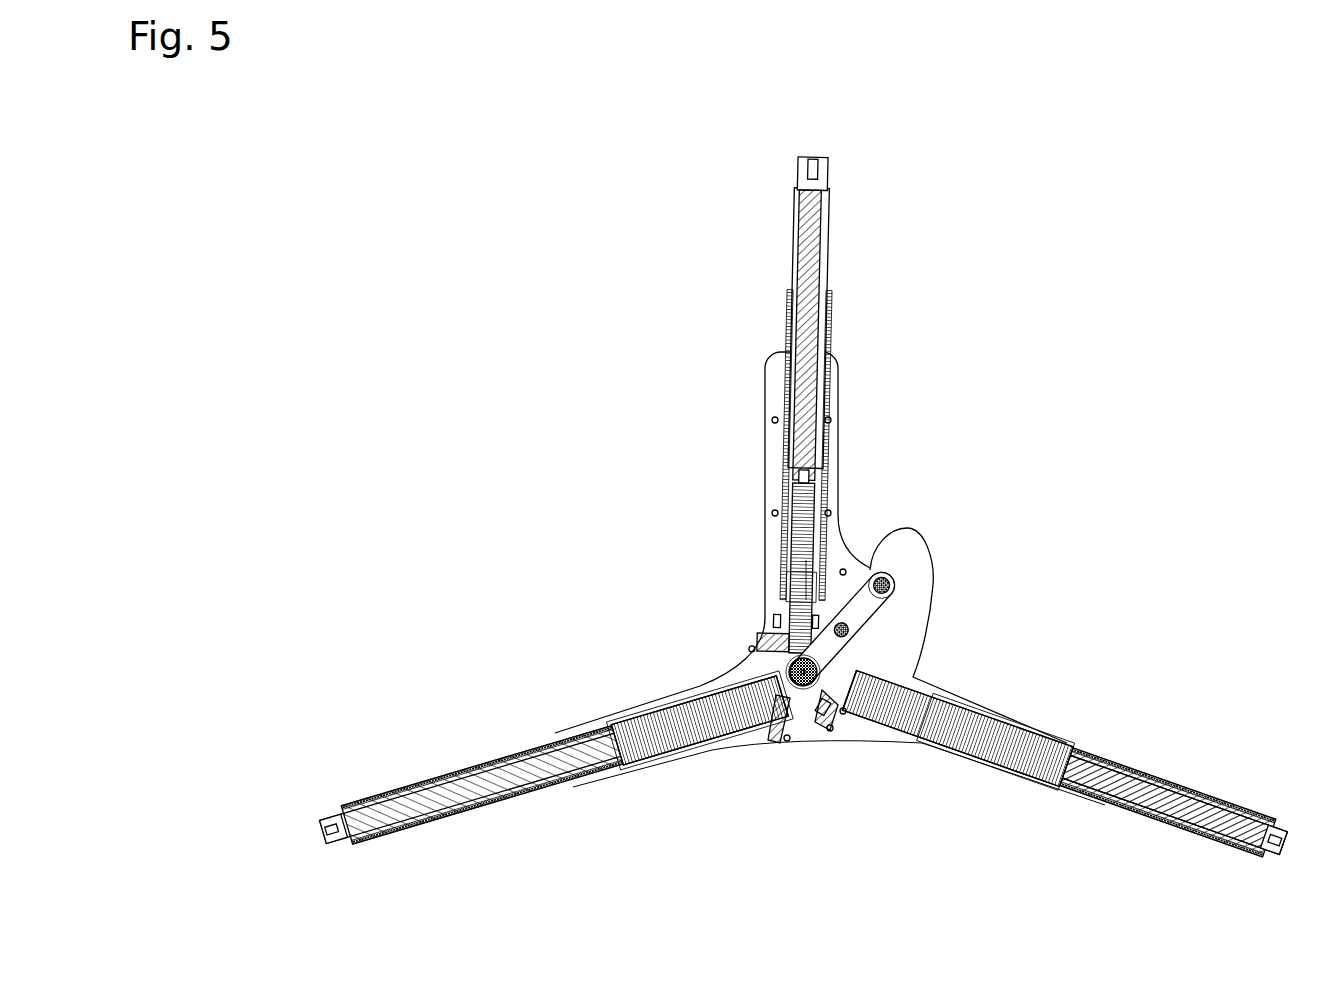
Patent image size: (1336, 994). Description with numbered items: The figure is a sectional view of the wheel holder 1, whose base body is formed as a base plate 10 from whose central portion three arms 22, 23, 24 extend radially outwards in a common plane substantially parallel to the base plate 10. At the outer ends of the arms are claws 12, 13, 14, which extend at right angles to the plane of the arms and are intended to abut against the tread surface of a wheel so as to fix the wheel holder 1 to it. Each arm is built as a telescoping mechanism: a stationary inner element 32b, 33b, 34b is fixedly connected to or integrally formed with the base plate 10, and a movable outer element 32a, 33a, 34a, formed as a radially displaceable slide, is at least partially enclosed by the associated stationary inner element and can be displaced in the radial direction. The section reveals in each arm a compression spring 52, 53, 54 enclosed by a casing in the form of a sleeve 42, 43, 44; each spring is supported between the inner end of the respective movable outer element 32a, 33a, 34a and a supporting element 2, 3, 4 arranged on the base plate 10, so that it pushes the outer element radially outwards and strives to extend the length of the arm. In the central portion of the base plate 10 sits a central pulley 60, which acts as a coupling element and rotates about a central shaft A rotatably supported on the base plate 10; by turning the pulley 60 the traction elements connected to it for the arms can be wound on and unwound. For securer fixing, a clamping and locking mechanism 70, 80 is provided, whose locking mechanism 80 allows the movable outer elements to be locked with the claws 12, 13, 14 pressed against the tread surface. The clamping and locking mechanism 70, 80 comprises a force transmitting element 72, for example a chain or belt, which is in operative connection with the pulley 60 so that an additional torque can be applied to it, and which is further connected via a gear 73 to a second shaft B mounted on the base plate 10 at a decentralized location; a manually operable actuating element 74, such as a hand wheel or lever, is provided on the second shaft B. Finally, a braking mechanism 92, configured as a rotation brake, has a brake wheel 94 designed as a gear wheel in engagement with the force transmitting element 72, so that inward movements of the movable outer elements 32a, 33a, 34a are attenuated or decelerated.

The wheel holder 1 is at (1200, 254).
The supporting element 2 is at (750, 640).
The supporting element 3 is at (837, 717).
The supporting element 4 is at (782, 728).
The base plate 10 is at (830, 458).
The claw 12 is at (797, 386).
The claw 13 is at (1075, 776).
The claw 14 is at (541, 801).
The arm 22 is at (797, 378).
The arm 23 is at (1066, 767).
The arm 24 is at (562, 761).
The movable outer element 32a is at (836, 302).
The stationary inner element 32b is at (836, 386).
The movable outer element 33a is at (1132, 790).
The stationary inner element 33b is at (1144, 794).
The movable outer element 34a is at (491, 782).
The stationary inner element 34b is at (562, 761).
The sleeve 42 is at (753, 561).
The sleeve 43 is at (878, 722).
The sleeve 44 is at (697, 733).
The compression spring 52 is at (787, 578).
The compression spring 53 is at (912, 720).
The compression spring 54 is at (699, 720).
The central pulley 60 is at (817, 700).
The clamping and locking mechanism 70 is at (883, 587).
The locking mechanism 80 is at (883, 587).
The force transmitting element 72 is at (883, 587).
The gear 73 is at (890, 570).
The manually operable actuating element 74 is at (937, 558).
The braking mechanism 92 is at (832, 598).
The brake wheel 94 is at (841, 630).
The central shaft A is at (803, 700).
The second shaft B is at (881, 585).